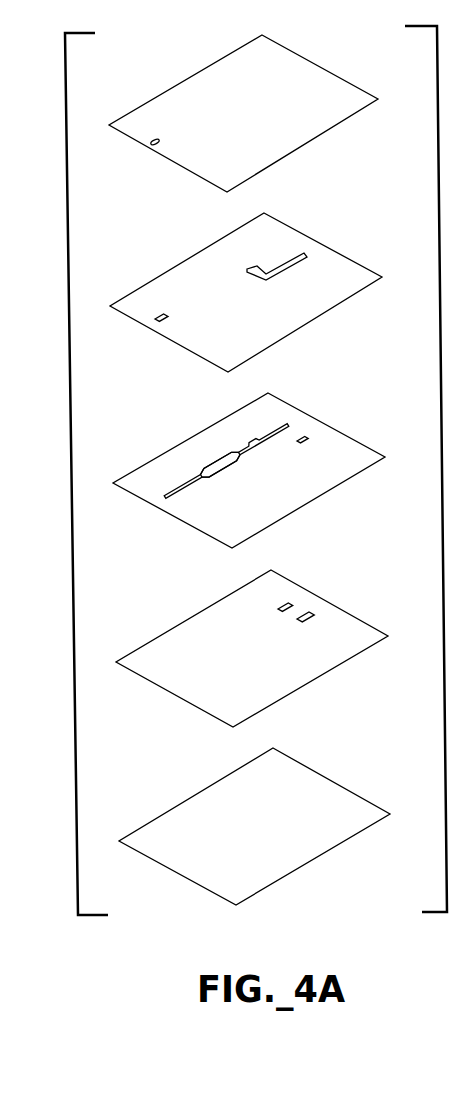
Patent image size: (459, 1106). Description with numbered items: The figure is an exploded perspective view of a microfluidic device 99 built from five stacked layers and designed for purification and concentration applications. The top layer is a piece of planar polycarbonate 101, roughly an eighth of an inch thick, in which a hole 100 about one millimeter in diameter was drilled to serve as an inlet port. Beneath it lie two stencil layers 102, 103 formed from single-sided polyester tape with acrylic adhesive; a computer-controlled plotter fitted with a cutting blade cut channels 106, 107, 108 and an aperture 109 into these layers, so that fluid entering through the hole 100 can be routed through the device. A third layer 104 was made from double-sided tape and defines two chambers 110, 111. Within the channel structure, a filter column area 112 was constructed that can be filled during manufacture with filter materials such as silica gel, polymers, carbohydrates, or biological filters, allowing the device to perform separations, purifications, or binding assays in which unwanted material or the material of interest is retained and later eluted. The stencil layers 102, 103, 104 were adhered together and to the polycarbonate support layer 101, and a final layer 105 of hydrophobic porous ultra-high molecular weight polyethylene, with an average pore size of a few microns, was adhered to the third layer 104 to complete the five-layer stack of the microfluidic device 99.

The microfluidic device 99 is at (65, 453).
The hole 100 is at (150, 145).
The planar polycarbonate 101 is at (362, 112).
The stencil layer 102 is at (357, 295).
The stencil layer 103 is at (358, 475).
The third layer 104 is at (370, 650).
The final layer 105 is at (360, 836).
The channel 106 is at (160, 313).
The channel 107 is at (290, 263).
The channel 108 is at (180, 485).
The aperture 109 is at (307, 433).
The chamber 110 is at (290, 603).
The chamber 111 is at (308, 613).
The filter column area 112 is at (213, 462).